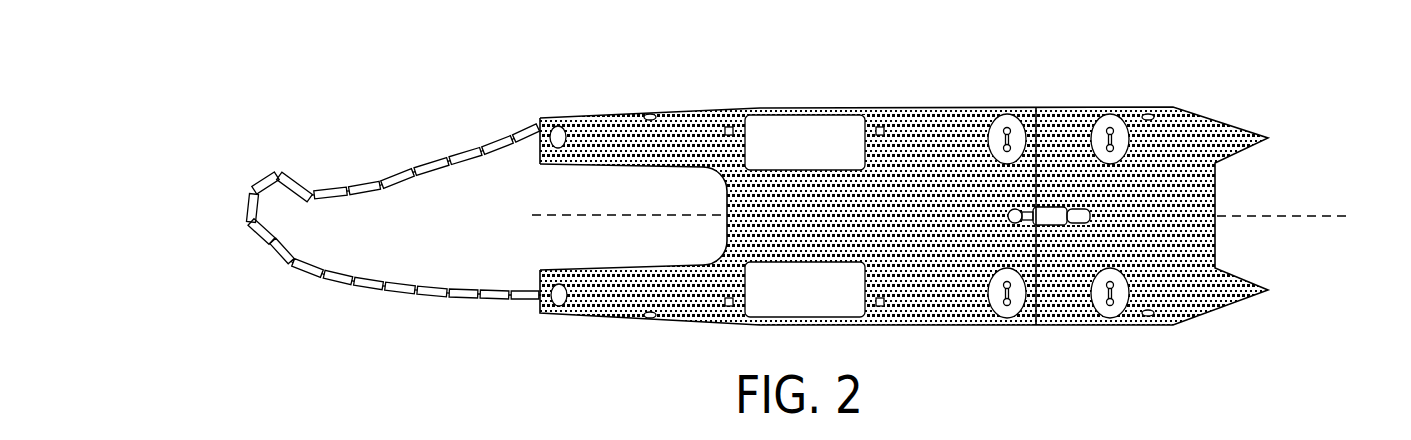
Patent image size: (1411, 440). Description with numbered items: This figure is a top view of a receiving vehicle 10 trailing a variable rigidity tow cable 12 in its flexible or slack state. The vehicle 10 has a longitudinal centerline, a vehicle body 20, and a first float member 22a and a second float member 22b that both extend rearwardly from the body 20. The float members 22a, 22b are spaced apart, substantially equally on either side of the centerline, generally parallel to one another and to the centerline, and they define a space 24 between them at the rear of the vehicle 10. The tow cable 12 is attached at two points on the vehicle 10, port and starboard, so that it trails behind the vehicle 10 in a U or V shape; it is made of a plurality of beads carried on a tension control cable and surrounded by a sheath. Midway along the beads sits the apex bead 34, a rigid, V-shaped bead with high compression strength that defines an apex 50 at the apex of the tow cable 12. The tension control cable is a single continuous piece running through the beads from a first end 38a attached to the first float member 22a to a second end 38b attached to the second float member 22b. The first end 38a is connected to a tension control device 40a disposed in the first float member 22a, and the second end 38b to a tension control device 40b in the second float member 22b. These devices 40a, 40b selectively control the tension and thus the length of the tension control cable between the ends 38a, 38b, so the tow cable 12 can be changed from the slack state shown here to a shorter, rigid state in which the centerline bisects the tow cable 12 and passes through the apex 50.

The receiving vehicle 10 is at (952, 103).
The variable rigidity tow cable 12 is at (423, 161).
The vehicle body 20 is at (1053, 118).
The first float member 22a is at (620, 127).
The second float member 22b is at (628, 312).
The space 24 is at (673, 200).
The apex bead 34 is at (250, 213).
The first end 38a is at (539, 125).
The second end 38b is at (540, 300).
The tension control device 40a is at (558, 125).
The tension control device 40b is at (561, 307).
The apex 50 is at (250, 223).